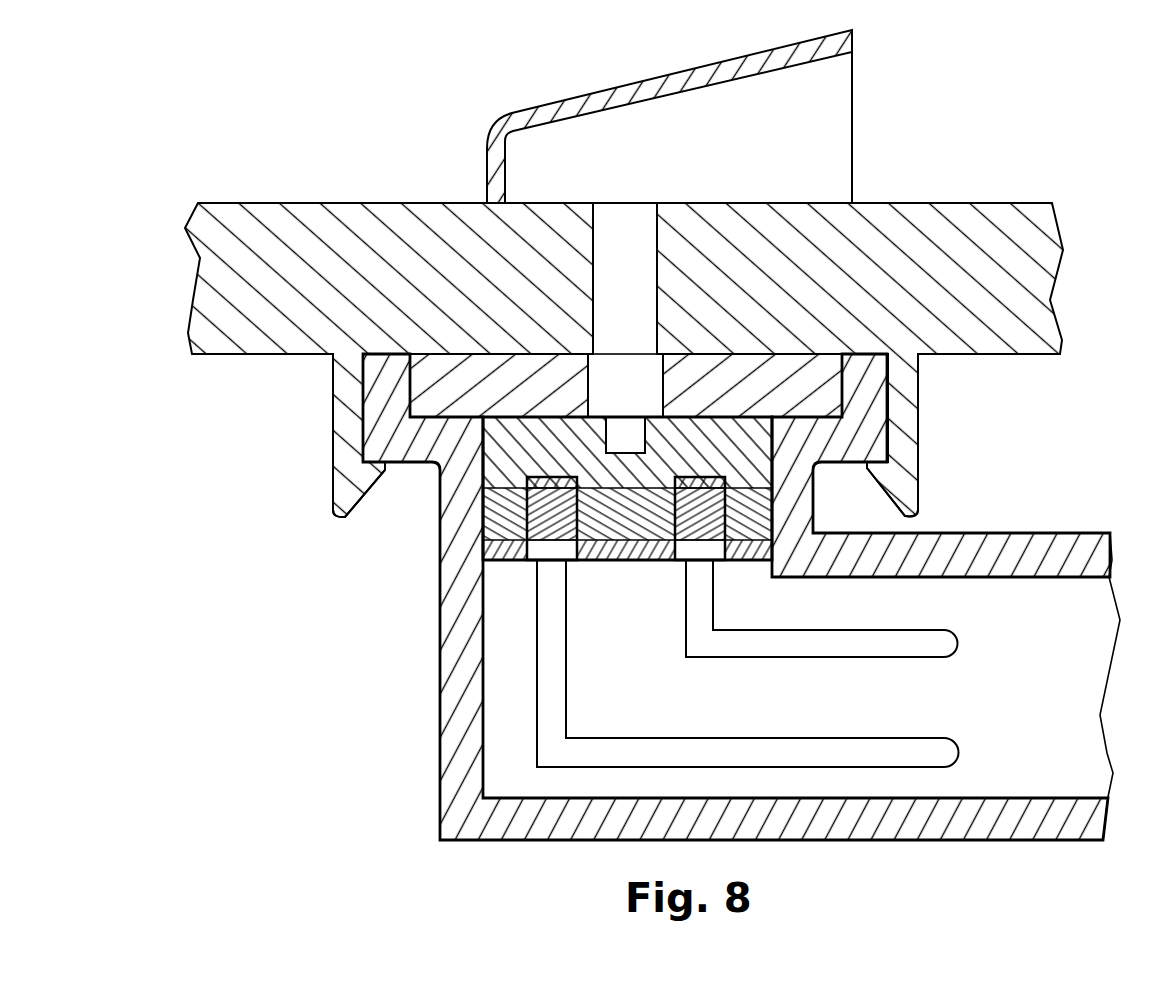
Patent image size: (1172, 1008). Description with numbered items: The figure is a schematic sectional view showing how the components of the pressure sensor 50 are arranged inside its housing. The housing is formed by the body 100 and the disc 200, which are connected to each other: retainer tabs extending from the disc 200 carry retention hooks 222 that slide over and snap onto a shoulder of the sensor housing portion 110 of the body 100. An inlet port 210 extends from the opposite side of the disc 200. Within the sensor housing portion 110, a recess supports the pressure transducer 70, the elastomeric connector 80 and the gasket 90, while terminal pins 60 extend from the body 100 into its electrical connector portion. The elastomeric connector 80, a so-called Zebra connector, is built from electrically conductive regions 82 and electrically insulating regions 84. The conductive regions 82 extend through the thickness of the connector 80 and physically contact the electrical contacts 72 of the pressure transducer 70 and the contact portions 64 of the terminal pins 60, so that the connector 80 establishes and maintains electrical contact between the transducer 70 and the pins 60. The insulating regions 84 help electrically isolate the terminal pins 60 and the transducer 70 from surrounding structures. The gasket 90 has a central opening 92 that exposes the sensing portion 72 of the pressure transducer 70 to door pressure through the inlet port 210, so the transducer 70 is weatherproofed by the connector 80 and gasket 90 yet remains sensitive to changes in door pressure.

The pressure sensor 50 is at (320, 76).
The terminal pins 60 is at (860, 743).
The contact portions 64 is at (690, 547).
The pressure transducer 70 is at (717, 462).
The electrical contacts 72 is at (625, 440).
The elastomeric connector 80 is at (505, 520).
The electrically conductive regions 82 is at (545, 515).
The electrically insulating regions 84 is at (505, 500).
The gasket 90 is at (787, 386).
The central opening 92 is at (645, 385).
The body portion 100 is at (458, 516).
The sensor housing portion 110 is at (387, 403).
The disc portion 200 is at (418, 272).
The inlet port 210 is at (750, 60).
The retention hooks 222 is at (360, 477).